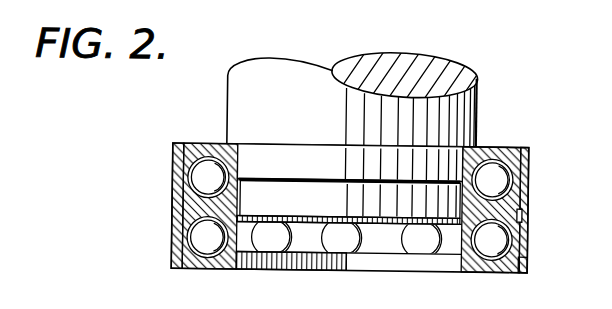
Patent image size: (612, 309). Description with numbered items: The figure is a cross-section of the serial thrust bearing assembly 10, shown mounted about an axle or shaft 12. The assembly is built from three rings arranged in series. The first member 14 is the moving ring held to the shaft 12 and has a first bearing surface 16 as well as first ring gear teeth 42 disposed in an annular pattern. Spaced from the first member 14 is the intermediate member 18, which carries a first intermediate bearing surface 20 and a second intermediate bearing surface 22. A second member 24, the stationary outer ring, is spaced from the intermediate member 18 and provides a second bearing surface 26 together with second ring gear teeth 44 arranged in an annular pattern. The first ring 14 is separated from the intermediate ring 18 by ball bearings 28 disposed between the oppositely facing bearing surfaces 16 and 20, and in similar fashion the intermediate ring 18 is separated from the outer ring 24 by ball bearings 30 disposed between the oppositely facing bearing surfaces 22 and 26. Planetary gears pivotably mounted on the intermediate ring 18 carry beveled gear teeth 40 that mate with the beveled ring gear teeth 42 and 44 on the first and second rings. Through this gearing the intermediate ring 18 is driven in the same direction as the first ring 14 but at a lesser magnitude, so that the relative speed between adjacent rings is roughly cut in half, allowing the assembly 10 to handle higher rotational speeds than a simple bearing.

The serial thrust bearing assembly 10 is at (585, 290).
The axle 12 is at (467, 97).
The first member 14 is at (497, 146).
The first bearing surface 16 is at (510, 178).
The intermediate member 18 is at (200, 215).
The first intermediate bearing surface 20 is at (200, 179).
The second intermediate bearing surface 22 is at (203, 234).
The second member 24 is at (485, 273).
The second bearing surface 26 is at (510, 238).
The ball bearings 28 is at (227, 170).
The ball bearings 30 is at (337, 245).
The beveled gear teeth 40 is at (180, 266).
The first ring gear teeth 42 is at (528, 162).
The second ring gear teeth 44 is at (530, 256).